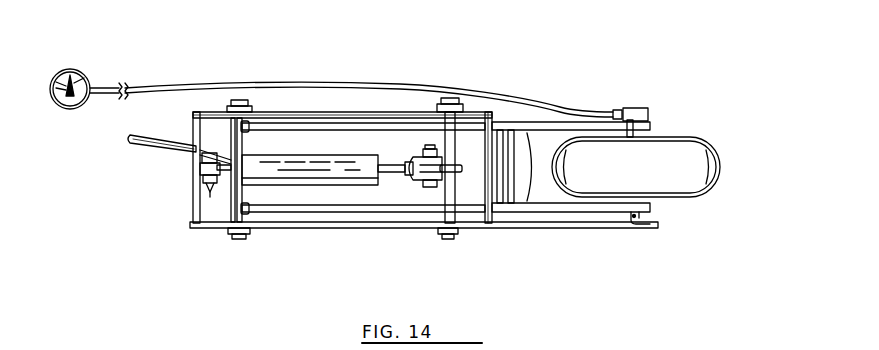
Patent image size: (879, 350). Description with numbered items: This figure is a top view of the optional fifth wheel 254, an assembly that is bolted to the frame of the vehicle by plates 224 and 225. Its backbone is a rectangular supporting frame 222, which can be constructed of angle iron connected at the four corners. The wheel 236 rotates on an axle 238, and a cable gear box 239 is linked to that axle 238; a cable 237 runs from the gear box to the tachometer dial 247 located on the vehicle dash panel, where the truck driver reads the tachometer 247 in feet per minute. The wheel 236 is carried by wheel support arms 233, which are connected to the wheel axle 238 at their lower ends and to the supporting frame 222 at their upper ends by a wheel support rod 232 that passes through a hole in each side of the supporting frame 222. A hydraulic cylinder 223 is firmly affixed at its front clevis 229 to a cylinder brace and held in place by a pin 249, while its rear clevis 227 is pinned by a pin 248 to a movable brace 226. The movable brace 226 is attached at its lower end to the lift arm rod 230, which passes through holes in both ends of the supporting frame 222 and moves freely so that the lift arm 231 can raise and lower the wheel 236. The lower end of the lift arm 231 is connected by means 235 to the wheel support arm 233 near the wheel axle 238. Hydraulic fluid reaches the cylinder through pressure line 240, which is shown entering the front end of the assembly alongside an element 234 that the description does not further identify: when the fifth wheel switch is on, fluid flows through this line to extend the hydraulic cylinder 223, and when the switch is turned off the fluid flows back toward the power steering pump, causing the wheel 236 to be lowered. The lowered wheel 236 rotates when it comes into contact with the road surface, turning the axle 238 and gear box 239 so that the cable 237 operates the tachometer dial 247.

The supporting frame 222 is at (350, 228).
The hydraulic cylinder 223 is at (314, 156).
The plate 224 is at (216, 112).
The plate 225 is at (474, 112).
The movable brace 226 is at (426, 176).
The rear clevis 227 is at (418, 158).
The front clevis 229 is at (202, 155).
The lift arm rod 230 is at (450, 239).
The lift arm 231 is at (565, 229).
The wheel support rod 232 is at (240, 239).
The wheel support arm 233 is at (571, 167).
The valve 234 is at (205, 168).
The connecting means 235 is at (648, 226).
The wheel 236 is at (655, 175).
The cable 237 is at (381, 86).
The axle 238 is at (641, 132).
The cable gear box 239 is at (635, 108).
The pressure line 240 is at (179, 132).
The tachometer dial 247 is at (70, 109).
The pin 248 is at (432, 180).
The pin 249 is at (216, 199).
The fifth wheel 254 is at (523, 75).